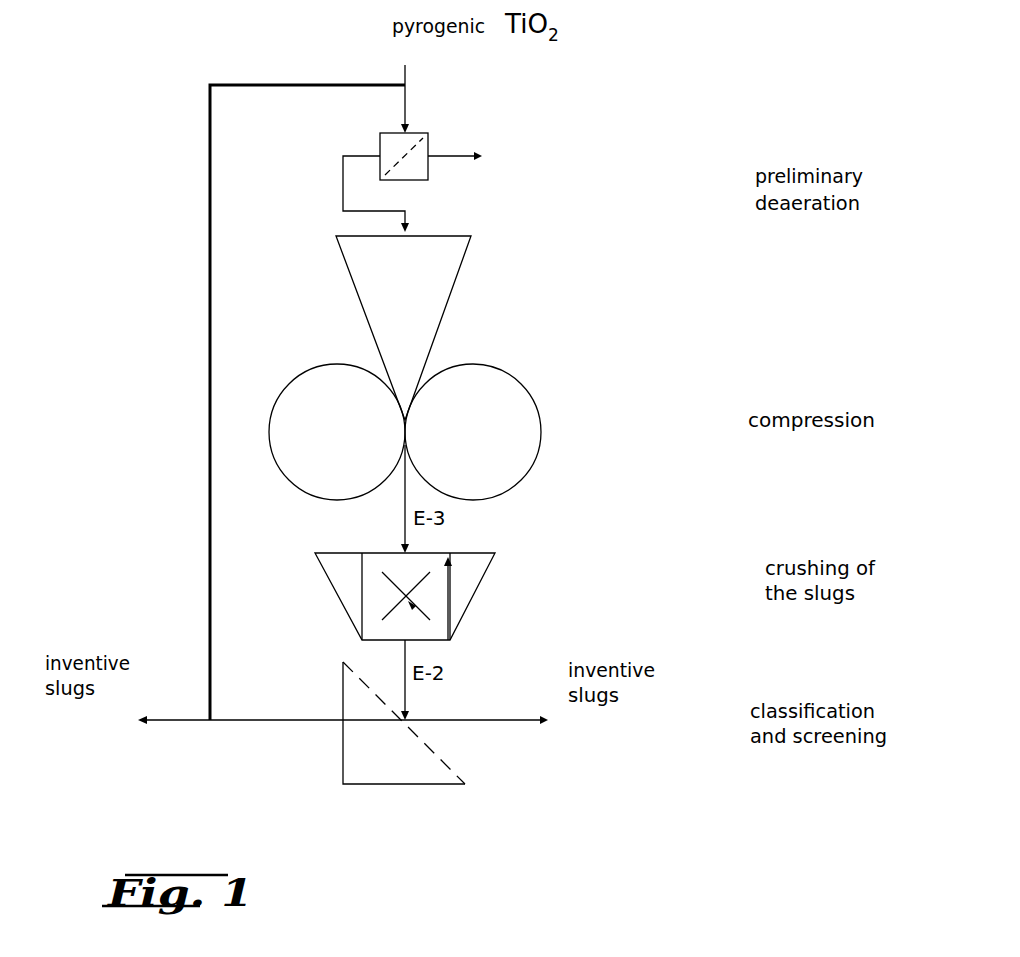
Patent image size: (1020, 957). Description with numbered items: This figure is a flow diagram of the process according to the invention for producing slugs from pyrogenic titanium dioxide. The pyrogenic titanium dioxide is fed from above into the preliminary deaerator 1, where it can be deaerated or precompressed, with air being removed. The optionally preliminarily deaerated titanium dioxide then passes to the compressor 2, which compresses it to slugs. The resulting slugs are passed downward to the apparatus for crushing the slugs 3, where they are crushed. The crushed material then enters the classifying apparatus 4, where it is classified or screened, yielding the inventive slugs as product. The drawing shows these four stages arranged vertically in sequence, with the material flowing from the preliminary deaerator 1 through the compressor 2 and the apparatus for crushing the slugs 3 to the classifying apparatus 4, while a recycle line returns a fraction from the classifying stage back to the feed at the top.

The preliminary deaerator 1 is at (430, 148).
The compressor 2 is at (516, 430).
The apparatus for crushing the slugs 3 is at (460, 596).
The classifying apparatus 4 is at (435, 770).